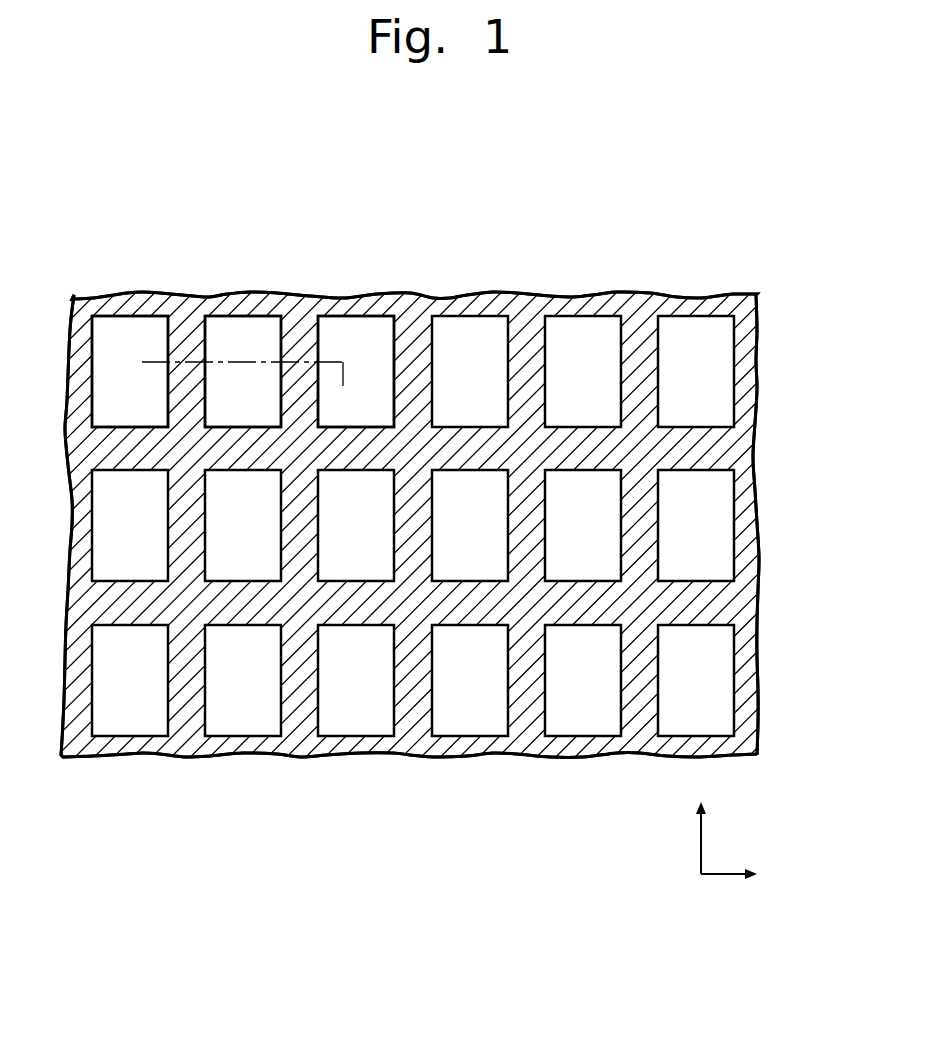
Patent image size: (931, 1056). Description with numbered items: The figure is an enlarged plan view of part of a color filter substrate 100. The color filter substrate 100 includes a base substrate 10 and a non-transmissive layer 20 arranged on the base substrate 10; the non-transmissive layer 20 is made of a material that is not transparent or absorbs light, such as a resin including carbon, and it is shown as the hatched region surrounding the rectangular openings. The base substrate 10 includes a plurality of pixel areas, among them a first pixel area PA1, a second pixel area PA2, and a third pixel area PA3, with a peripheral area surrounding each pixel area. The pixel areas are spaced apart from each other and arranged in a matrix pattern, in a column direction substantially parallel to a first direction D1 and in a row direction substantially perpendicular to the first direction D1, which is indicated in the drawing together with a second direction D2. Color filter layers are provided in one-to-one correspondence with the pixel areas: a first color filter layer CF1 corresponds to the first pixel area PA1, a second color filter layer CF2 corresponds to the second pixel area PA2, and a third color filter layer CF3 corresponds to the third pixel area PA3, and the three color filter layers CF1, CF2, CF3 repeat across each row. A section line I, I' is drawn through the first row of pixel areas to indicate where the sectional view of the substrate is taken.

The color filter substrate 100 is at (654, 256).
The base substrate 10 is at (758, 399).
The non-transmissive layer 20 is at (746, 457).
The first color filter layer CF1 is at (131, 316).
The second color filter layer CF2 is at (244, 316).
The third color filter layer CF3 is at (357, 316).
The first pixel area PA1 is at (124, 406).
The second pixel area PA2 is at (248, 406).
The third pixel area PA3 is at (370, 406).
The section line I is at (240, 393).
The section line I' is at (341, 392).
The first direction D1 is at (701, 826).
The second direction D2 is at (743, 875).